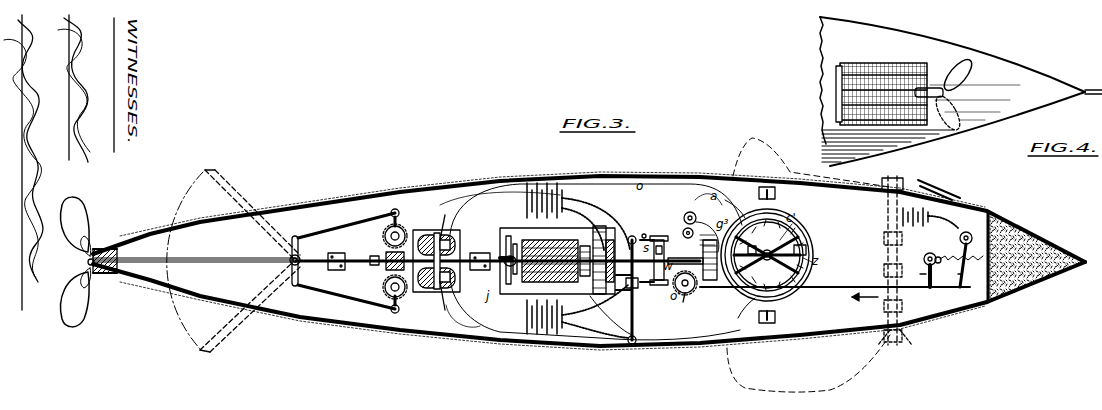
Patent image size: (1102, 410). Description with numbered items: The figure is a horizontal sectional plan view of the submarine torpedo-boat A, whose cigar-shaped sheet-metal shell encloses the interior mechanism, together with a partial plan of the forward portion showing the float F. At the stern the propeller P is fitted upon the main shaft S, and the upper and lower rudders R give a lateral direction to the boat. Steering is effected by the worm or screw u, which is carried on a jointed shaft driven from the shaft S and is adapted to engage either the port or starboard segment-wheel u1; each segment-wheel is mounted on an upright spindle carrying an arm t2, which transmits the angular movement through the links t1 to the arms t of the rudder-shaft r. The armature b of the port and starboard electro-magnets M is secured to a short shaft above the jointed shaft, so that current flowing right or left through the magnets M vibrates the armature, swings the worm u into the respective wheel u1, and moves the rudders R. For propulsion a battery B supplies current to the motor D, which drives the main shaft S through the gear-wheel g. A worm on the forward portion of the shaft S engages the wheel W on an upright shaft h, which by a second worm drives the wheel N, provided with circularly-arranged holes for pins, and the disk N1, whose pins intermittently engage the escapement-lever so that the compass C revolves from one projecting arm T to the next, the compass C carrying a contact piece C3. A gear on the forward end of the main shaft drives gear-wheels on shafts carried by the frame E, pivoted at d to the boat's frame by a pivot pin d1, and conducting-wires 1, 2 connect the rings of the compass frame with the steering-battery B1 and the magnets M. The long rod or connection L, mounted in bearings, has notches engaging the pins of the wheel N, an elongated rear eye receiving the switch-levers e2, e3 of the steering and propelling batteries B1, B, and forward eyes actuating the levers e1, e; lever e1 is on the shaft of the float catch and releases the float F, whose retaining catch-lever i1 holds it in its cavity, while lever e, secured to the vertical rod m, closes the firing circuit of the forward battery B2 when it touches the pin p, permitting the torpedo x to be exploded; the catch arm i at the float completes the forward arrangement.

In FIG. 3, the submarine torpedo-boat A is at (589, 273).
In FIG. 3, the propeller P is at (77, 262).
In FIG. 3, the main shaft S is at (240, 252).
In FIG. 3, the rudders R is at (214, 180).
In FIG. 3, the arms of the rudder-shaft t is at (300, 245).
In FIG. 3, the links t1 is at (334, 230).
In FIG. 3, the arm of the spindle t2 is at (399, 215).
In FIG. 3, the rudder-shaft r is at (300, 268).
In FIG. 3, the worm or screw u is at (386, 255).
In FIG. 3, the segment-wheels u1 is at (384, 240).
In FIG. 3, the electro-magnets M is at (426, 295).
In FIG. 3, the armature b is at (447, 261).
In FIG. 3, the motor D is at (557, 260).
In FIG. 3, the gear-wheel g is at (596, 260).
In FIG. 3, the propelling battery B is at (532, 317).
In FIG. 3, the steering-battery B1 is at (532, 200).
In FIG. 3, the firing battery B2 is at (930, 211).
In FIG. 3, the switch-lever of the steering battery e2 is at (633, 273).
In FIG. 3, the switch-lever of the propelling battery e3 is at (639, 329).
In FIG. 3, the wheel N is at (654, 260).
In FIG. 3, the disk N1 is at (661, 238).
In FIG. 3, the wheel W is at (690, 292).
In FIG. 3, the gear shaft h is at (680, 304).
In FIG. 3, the pivot d is at (681, 227).
In FIG. 3, the roller d1 is at (689, 209).
In FIG. 3, the frame E is at (707, 234).
In FIG. 3, the gyroscope wheel C is at (790, 243).
In FIG. 3, the wheel contact C3 is at (750, 243).
In FIG. 3, the conducting-wire 1 is at (733, 202).
In FIG. 3, the conducting-wire 2 is at (742, 315).
In FIG. 3, the rod or connection L is at (848, 284).
In FIG. 3, the arm T is at (885, 214).
In FIG. 3, the pin p is at (940, 247).
In FIG. 3, the lever arm i1 is at (945, 233).
In FIG. 3, the lever e1 is at (916, 276).
In FIG. 3, the lever e is at (955, 276).
In FIG. 3, the vertical rod m is at (989, 230).
In FIG. 3, the torpedo x is at (1010, 292).
In FIG. 4, the float F is at (881, 94).
In FIG. 4, the firing propeller i is at (948, 80).